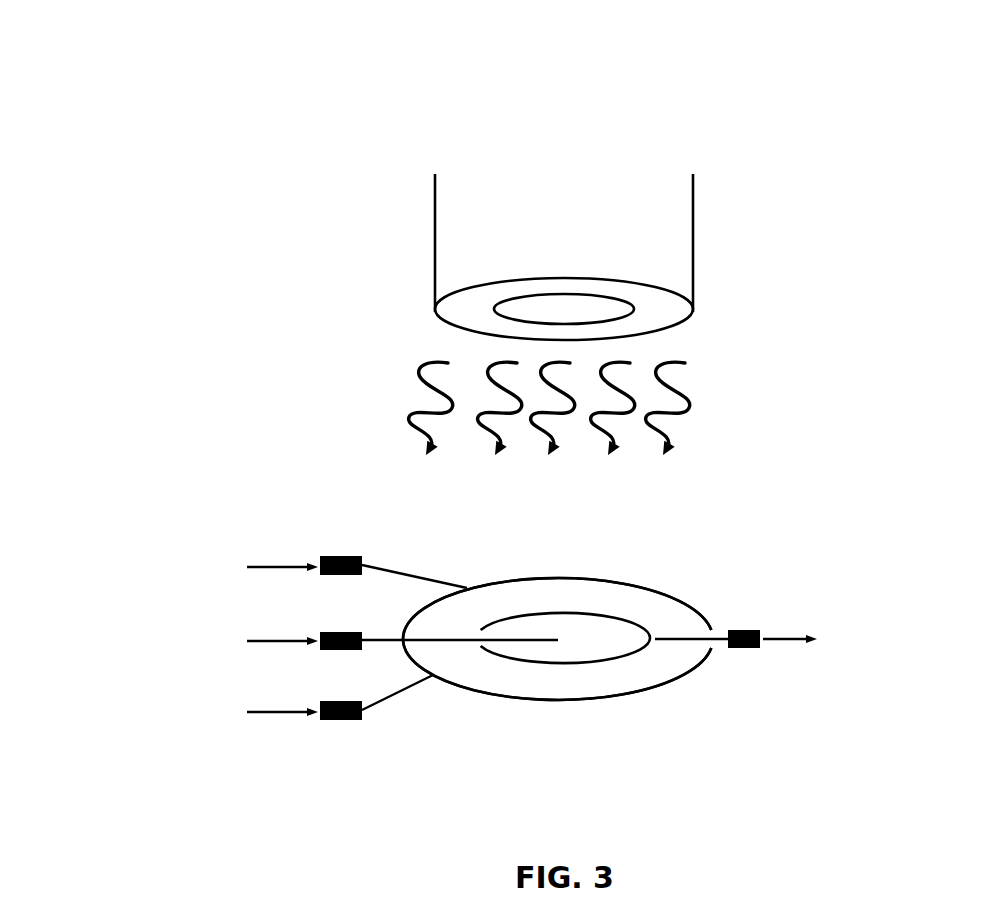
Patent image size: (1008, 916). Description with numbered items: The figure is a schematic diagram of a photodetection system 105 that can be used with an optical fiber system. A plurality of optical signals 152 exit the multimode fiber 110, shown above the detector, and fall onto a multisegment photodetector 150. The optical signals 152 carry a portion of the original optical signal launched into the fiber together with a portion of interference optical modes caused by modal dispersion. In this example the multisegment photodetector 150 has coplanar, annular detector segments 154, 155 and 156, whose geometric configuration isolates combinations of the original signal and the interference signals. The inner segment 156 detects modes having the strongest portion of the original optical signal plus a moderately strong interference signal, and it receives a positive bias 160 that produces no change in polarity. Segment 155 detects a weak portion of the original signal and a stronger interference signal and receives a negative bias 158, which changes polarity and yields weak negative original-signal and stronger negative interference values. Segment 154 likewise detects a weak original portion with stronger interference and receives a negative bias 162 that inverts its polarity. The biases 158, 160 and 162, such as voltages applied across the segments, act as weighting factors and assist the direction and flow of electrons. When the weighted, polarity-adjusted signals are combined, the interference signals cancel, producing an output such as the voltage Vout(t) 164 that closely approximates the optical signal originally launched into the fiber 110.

The multimode fiber 110 is at (545, 113).
The optical signals 152 is at (383, 398).
The photodetection system 105 is at (507, 657).
The multisegment photodetector 150 is at (568, 673).
The detector segment 154 is at (510, 580).
The detector segment 155 is at (662, 683).
The detector segment 156 is at (502, 658).
The negative bias 158 is at (163, 567).
The positive bias 160 is at (163, 641).
The negative bias 162 is at (163, 712).
The output voltage Vout(t) 164 is at (782, 647).